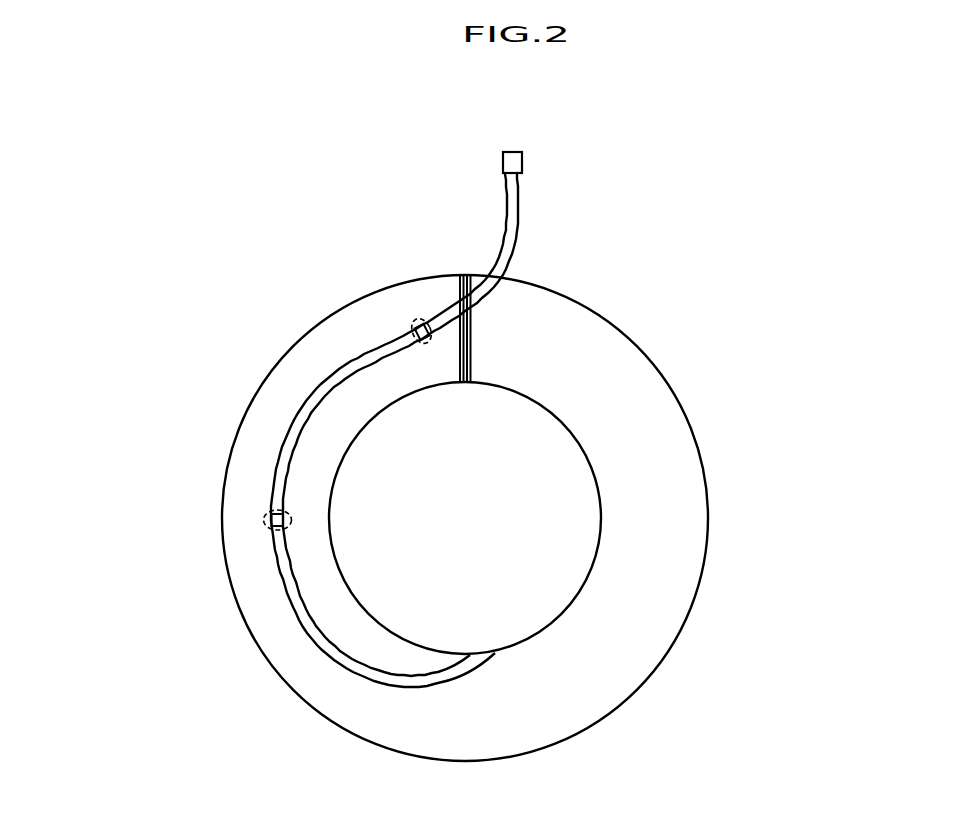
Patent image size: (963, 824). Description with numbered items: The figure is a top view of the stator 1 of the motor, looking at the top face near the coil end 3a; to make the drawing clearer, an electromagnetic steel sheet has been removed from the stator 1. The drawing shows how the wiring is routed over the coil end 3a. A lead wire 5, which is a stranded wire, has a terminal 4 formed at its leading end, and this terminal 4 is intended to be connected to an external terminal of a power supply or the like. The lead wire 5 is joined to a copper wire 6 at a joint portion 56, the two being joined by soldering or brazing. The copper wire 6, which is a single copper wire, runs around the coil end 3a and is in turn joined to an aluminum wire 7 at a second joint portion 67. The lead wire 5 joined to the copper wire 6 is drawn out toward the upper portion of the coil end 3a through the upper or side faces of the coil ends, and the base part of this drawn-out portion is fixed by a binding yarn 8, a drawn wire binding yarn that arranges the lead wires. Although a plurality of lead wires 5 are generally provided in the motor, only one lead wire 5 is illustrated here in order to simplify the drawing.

The stator 1 is at (826, 203).
The coil end 3a is at (690, 474).
The terminal 4 is at (510, 152).
The lead wire 5 is at (519, 204).
The copper wire 6 is at (322, 388).
The aluminum wire 7 is at (310, 631).
The binding yarn 8 is at (461, 282).
The joint portion 56 is at (414, 320).
The joint portion 67 is at (263, 521).